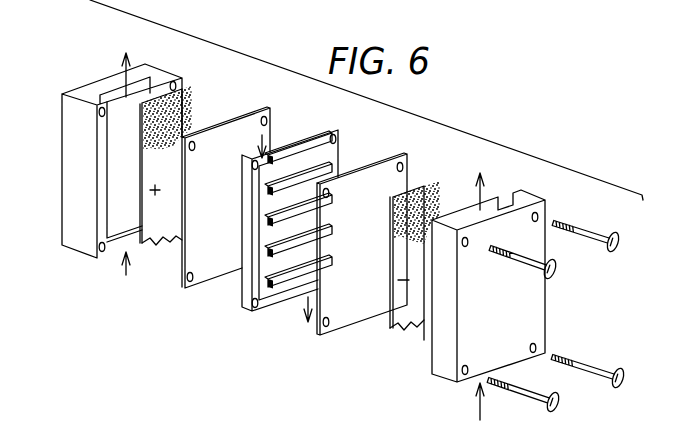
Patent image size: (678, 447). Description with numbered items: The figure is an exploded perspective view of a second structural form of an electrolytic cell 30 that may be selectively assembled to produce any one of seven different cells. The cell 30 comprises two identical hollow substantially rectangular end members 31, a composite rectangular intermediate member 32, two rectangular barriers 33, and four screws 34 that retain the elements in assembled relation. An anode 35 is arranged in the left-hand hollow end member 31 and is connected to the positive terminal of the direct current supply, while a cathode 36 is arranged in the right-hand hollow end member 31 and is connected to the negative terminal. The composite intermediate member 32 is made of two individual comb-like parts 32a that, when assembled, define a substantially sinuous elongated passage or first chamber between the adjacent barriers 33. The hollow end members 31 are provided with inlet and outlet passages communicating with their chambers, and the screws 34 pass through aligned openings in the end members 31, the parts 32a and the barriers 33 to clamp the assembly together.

The electrolytic cell 30 is at (48, 86).
The hollow end member 31 is at (72, 172).
The composite intermediate member 32 is at (264, 217).
The comb-like part 32a is at (316, 146).
The barrier 33 is at (232, 130).
The screw 34 is at (610, 251).
The anode 35 is at (192, 103).
The cathode 36 is at (437, 182).